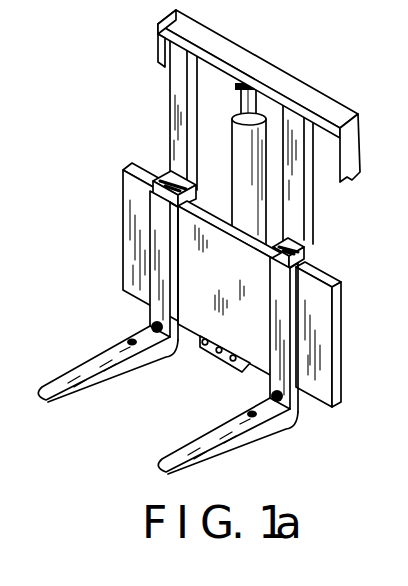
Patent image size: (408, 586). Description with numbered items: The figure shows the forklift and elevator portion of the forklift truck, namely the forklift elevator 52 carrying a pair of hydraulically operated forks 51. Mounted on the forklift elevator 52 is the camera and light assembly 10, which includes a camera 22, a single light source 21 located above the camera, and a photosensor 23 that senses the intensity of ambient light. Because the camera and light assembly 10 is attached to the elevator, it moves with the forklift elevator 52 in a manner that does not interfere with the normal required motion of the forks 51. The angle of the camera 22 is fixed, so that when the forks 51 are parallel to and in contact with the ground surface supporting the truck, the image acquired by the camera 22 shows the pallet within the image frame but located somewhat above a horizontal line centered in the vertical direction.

The camera and light assembly 10 is at (207, 315).
The light source 21 is at (197, 339).
The camera 22 is at (213, 352).
The photosensor 23 is at (232, 362).
The forks 51 is at (92, 359).
The forklift elevator 52 is at (318, 385).